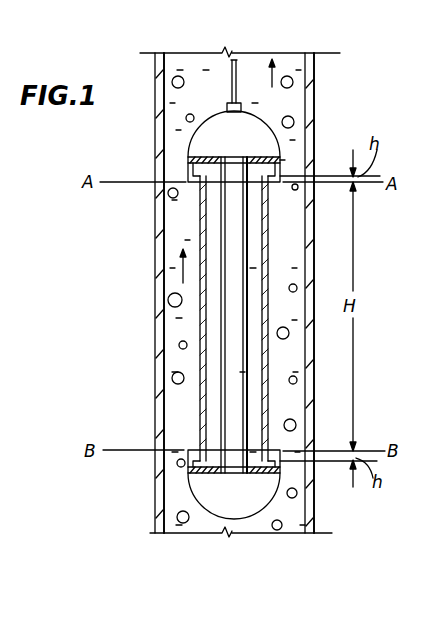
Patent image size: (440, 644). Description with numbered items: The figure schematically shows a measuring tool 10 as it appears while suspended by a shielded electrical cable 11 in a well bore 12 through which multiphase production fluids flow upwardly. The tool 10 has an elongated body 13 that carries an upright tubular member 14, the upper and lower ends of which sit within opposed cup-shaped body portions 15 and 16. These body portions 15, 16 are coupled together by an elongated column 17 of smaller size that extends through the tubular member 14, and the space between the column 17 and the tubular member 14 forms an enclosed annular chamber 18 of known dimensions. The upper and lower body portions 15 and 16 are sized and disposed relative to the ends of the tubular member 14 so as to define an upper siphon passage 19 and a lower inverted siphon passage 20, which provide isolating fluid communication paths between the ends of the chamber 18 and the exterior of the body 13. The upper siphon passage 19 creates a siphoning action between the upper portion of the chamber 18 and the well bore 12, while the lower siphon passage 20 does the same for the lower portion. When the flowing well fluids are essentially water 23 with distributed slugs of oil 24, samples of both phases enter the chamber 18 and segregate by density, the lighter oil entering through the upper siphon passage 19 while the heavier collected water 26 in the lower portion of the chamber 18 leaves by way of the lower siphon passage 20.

The measuring tool 10 is at (227, 265).
The shielded electrical cable 11 is at (236, 60).
The well bore 12 is at (304, 75).
The elongated body 13 is at (173, 348).
The upright tubular member 14 is at (312, 270).
The upper cup-shaped body portion 15 is at (250, 150).
The lower cup-shaped body portion 16 is at (250, 511).
The elongated column 17 is at (227, 275).
The annular chamber 18 is at (207, 212).
The upper siphon passage 19 is at (190, 172).
The lower inverted siphon passage 20 is at (190, 468).
The water 23 is at (300, 519).
The slugs of oil 24 is at (172, 303).
The collected water 26 is at (219, 380).